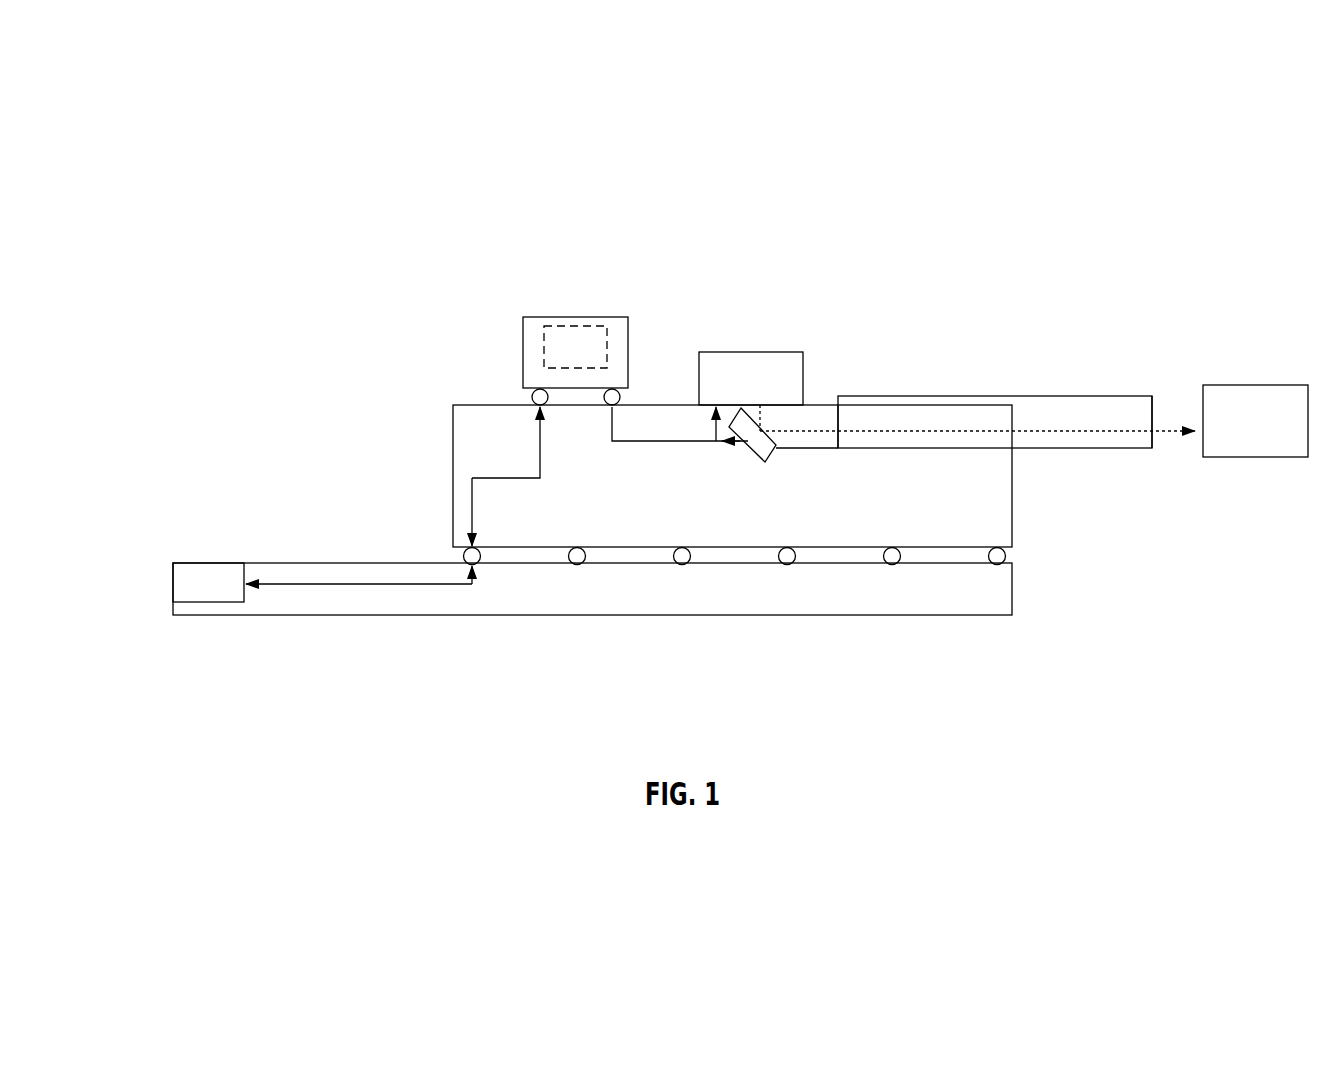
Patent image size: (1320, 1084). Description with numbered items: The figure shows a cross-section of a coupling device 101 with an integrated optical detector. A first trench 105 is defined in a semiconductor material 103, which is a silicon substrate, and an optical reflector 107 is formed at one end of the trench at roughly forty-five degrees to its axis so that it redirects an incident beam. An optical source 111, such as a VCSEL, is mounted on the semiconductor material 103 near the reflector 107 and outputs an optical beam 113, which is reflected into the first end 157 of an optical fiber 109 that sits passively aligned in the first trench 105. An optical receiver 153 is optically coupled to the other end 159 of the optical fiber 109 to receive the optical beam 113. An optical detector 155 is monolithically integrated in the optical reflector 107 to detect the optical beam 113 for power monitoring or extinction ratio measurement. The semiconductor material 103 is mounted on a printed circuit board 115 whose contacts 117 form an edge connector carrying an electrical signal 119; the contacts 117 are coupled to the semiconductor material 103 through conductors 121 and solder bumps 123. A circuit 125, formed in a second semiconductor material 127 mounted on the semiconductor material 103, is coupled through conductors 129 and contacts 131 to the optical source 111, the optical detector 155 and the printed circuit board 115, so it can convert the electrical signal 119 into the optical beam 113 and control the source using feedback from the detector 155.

The coupling device 101 is at (1014, 216).
The semiconductor material 103 is at (1012, 487).
The first trench 105 is at (832, 449).
The optical reflector 107 is at (778, 446).
The optical fiber 109 is at (975, 396).
The optical source 111 is at (745, 352).
The optical beam 113 is at (1168, 433).
The printed circuit board 115 is at (1012, 592).
The contacts 117 is at (212, 566).
The electrical signal 119 is at (104, 551).
The conductors 121 is at (480, 584).
The solder bumps 123 is at (463, 555).
The circuit 125 is at (607, 347).
The semiconductor material 127 is at (578, 317).
The conductors 129 is at (508, 478).
The contacts 131 is at (531, 403).
The optical receiver 153 is at (1253, 385).
The optical detector 155 is at (746, 447).
The first end of optical fiber 157 is at (838, 418).
The other end of optical fiber 159 is at (1154, 418).